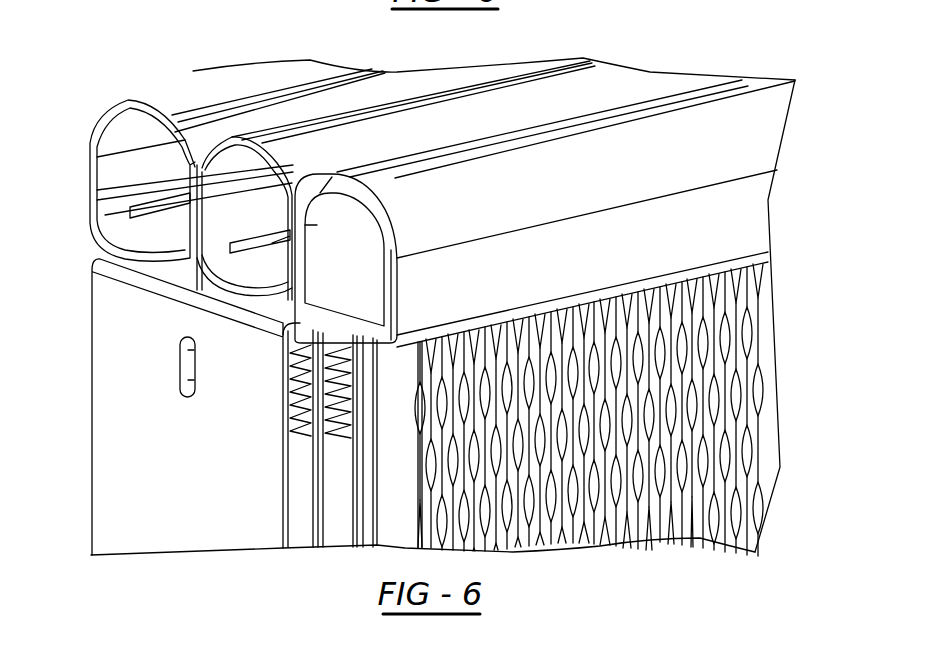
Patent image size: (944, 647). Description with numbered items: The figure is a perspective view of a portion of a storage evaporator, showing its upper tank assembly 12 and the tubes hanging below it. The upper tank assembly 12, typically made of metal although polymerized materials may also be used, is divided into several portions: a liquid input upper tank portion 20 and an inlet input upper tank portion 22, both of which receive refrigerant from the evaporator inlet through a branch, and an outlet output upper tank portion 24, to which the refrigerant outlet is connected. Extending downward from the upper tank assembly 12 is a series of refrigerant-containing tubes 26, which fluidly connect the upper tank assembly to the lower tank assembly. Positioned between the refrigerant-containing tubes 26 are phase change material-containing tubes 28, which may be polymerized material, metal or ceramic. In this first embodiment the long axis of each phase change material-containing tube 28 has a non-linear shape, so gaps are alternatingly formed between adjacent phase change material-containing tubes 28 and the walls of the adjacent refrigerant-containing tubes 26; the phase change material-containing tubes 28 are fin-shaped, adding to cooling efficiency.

The upper tank assembly 12 is at (633, 88).
The liquid input upper tank portion 20 is at (302, 150).
The inlet input upper tank portion 22 is at (710, 147).
The outlet output upper tank portion 24 is at (148, 107).
The refrigerant-containing tubes 26 is at (705, 412).
The phase change material-containing tubes 28 is at (717, 328).